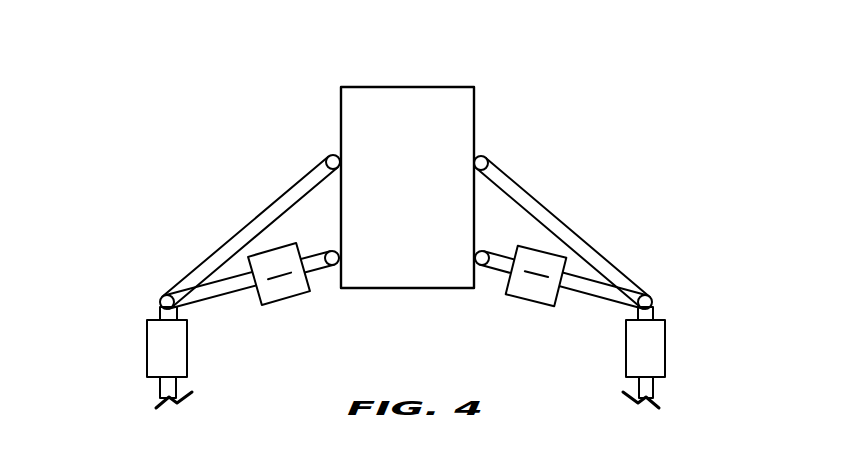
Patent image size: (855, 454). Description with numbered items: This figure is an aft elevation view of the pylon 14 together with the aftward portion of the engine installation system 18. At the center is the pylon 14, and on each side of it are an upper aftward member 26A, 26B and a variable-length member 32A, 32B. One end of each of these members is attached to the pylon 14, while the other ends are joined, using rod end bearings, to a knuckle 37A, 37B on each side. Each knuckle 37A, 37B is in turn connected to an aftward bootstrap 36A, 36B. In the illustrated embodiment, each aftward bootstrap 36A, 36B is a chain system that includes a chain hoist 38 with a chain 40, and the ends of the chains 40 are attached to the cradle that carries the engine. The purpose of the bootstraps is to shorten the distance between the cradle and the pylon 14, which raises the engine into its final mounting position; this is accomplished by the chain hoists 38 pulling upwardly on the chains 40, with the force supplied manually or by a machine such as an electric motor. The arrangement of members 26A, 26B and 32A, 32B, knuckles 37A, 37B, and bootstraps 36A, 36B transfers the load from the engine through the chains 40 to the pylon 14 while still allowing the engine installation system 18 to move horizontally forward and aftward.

The pylon 14 is at (429, 87).
The engine installation system 18 is at (583, 95).
The upper aftward member 26A is at (297, 180).
The upper aftward member 26B is at (515, 180).
The variable-length member 32A is at (320, 267).
The variable-length member 32B is at (488, 267).
The aftward bootstrap 36A is at (143, 332).
The aftward bootstrap 36B is at (673, 332).
The knuckle 37A is at (158, 313).
The knuckle 37B is at (653, 312).
The chain hoist 38 is at (147, 367).
The chain 40 is at (147, 337).